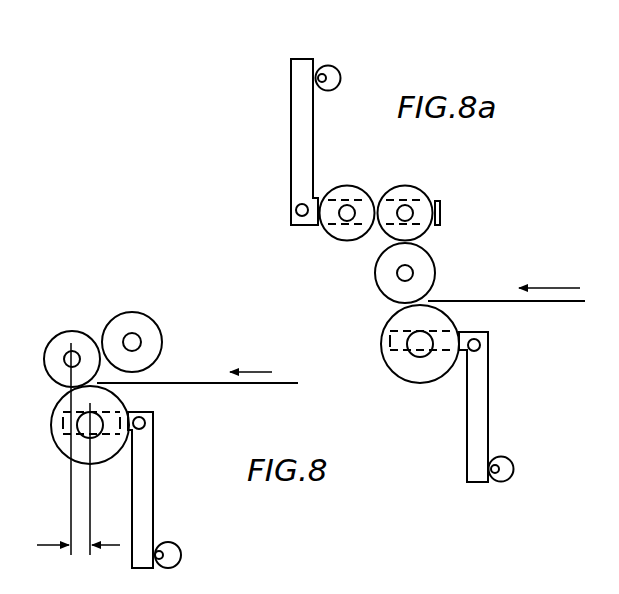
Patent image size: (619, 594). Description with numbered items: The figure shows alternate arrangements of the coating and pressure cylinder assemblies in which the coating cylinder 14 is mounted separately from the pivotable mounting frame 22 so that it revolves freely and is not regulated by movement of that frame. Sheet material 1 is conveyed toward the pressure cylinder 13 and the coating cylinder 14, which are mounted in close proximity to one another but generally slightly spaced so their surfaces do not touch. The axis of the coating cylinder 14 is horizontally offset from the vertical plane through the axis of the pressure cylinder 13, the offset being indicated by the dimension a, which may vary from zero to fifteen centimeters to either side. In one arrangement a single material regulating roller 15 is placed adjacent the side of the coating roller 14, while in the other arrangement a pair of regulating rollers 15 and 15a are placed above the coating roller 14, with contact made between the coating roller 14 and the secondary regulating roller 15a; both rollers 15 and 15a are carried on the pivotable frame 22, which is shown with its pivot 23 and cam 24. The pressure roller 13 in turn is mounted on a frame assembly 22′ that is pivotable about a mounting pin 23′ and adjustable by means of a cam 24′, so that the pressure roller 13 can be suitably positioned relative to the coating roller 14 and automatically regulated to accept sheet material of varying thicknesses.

In FIG. 8A, the sheet / web 1 is at (485, 300).
In FIG. 8, the sheet / web 1 is at (193, 362).
In FIG. 8A, the pressure cylinder 13 is at (412, 382).
In FIG. 8, the pressure cylinder 13 is at (63, 450).
In FIG. 8A, the coating cylinder 14 is at (375, 268).
In FIG. 8, the coating cylinder 14 is at (60, 332).
In FIG. 8A, the material regulating cylinder 15 is at (358, 155).
In FIG. 8, the material regulating cylinder 15 is at (144, 286).
In FIG. 8A, the secondary regulating roller 15a is at (447, 153).
In FIG. 8A, the mounting frame 22 is at (291, 113).
In FIG. 8A, the frame assembly 22′ is at (489, 406).
In FIG. 8, the frame assembly 22′ is at (153, 470).
In FIG. 8A, the pivot pin 23 is at (296, 209).
In FIG. 8A, the mounting pin 23′ is at (481, 348).
In FIG. 8, the mounting pin 23′ is at (147, 420).
In FIG. 8A, the guide roller 24 is at (370, 46).
In FIG. 8A, the cam 24′ is at (508, 469).
In FIG. 8, the cam 24′ is at (181, 555).
In FIG. 8, the dimension a is at (78, 450).